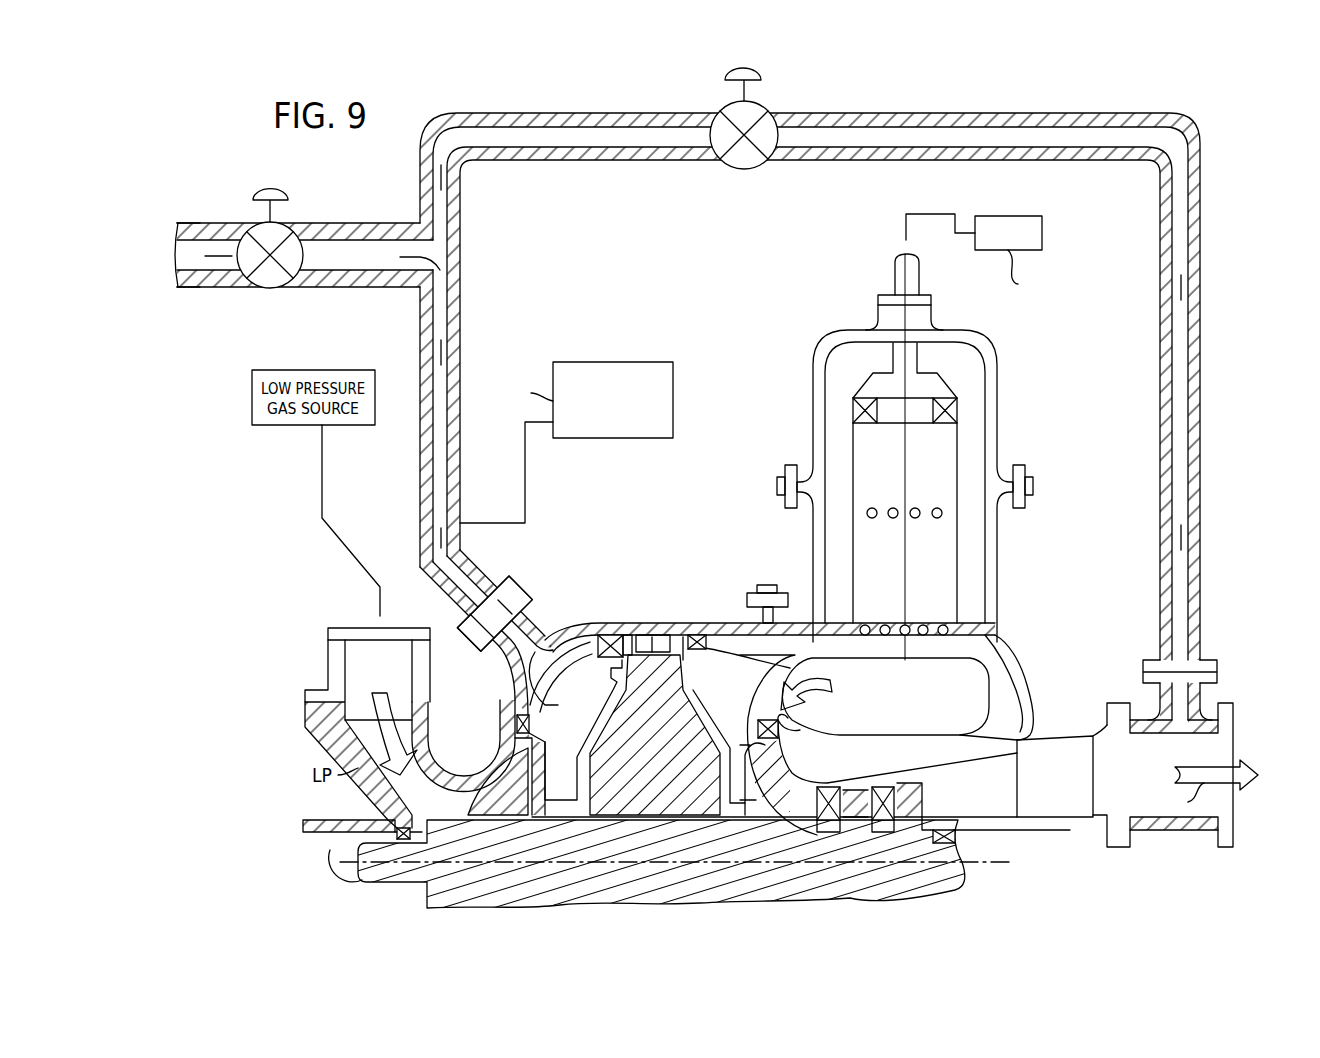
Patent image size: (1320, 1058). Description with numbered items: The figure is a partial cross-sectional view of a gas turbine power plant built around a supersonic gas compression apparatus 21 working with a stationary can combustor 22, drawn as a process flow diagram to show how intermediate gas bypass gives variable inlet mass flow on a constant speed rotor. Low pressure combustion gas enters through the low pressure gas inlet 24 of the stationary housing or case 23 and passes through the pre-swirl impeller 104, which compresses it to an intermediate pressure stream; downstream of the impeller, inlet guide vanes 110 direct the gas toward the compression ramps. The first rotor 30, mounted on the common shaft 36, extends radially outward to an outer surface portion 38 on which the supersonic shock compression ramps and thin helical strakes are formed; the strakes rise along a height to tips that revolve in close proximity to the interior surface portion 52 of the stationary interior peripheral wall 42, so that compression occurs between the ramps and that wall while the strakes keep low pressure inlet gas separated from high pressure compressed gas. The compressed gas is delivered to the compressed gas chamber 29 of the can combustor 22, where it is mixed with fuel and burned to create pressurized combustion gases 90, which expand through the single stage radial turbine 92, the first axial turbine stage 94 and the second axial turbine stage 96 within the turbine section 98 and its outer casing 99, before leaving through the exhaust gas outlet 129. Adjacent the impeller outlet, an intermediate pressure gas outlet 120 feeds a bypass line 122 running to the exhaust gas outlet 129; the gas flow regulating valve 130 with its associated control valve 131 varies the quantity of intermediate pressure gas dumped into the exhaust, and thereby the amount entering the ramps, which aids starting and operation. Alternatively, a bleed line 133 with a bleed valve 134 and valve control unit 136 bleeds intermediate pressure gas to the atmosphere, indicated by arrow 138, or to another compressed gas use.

The supersonic gas compression apparatus 21 is at (747, 318).
The can combustor 22 is at (998, 412).
The stationary housing or case 23 is at (595, 623).
The low pressure gas inlet 24 is at (430, 712).
The compressed gas chamber 29 is at (838, 453).
The first rotor 30 is at (660, 817).
The common shaft 36 is at (395, 883).
The outer surface portion 38 is at (660, 658).
The stationary interior peripheral wall 42 is at (735, 630).
The interior surface portion 52 is at (655, 635).
The combustion gases 90 is at (832, 696).
The single stage radial turbine 92 is at (787, 793).
The first axial turbine stage 94 is at (858, 792).
The second axial turbine stage 96 is at (925, 798).
The turbine section 98 is at (1049, 193).
The outer casing 99 is at (1058, 730).
The pre-swirl impeller 104 is at (478, 815).
The inlet guide vanes 110 is at (600, 665).
The intermediate pressure gas outlet 120 is at (505, 650).
The bypass line 122 is at (462, 388).
The exhaust gas outlet 129 is at (1225, 748).
The gas flow regulating valve 130 is at (735, 170).
The control valve 131 is at (763, 78).
The bleed line 133 is at (342, 223).
The bleed valve 134 is at (258, 290).
The valve control unit 136 is at (262, 196).
The bleed to atmosphere 138 is at (232, 253).